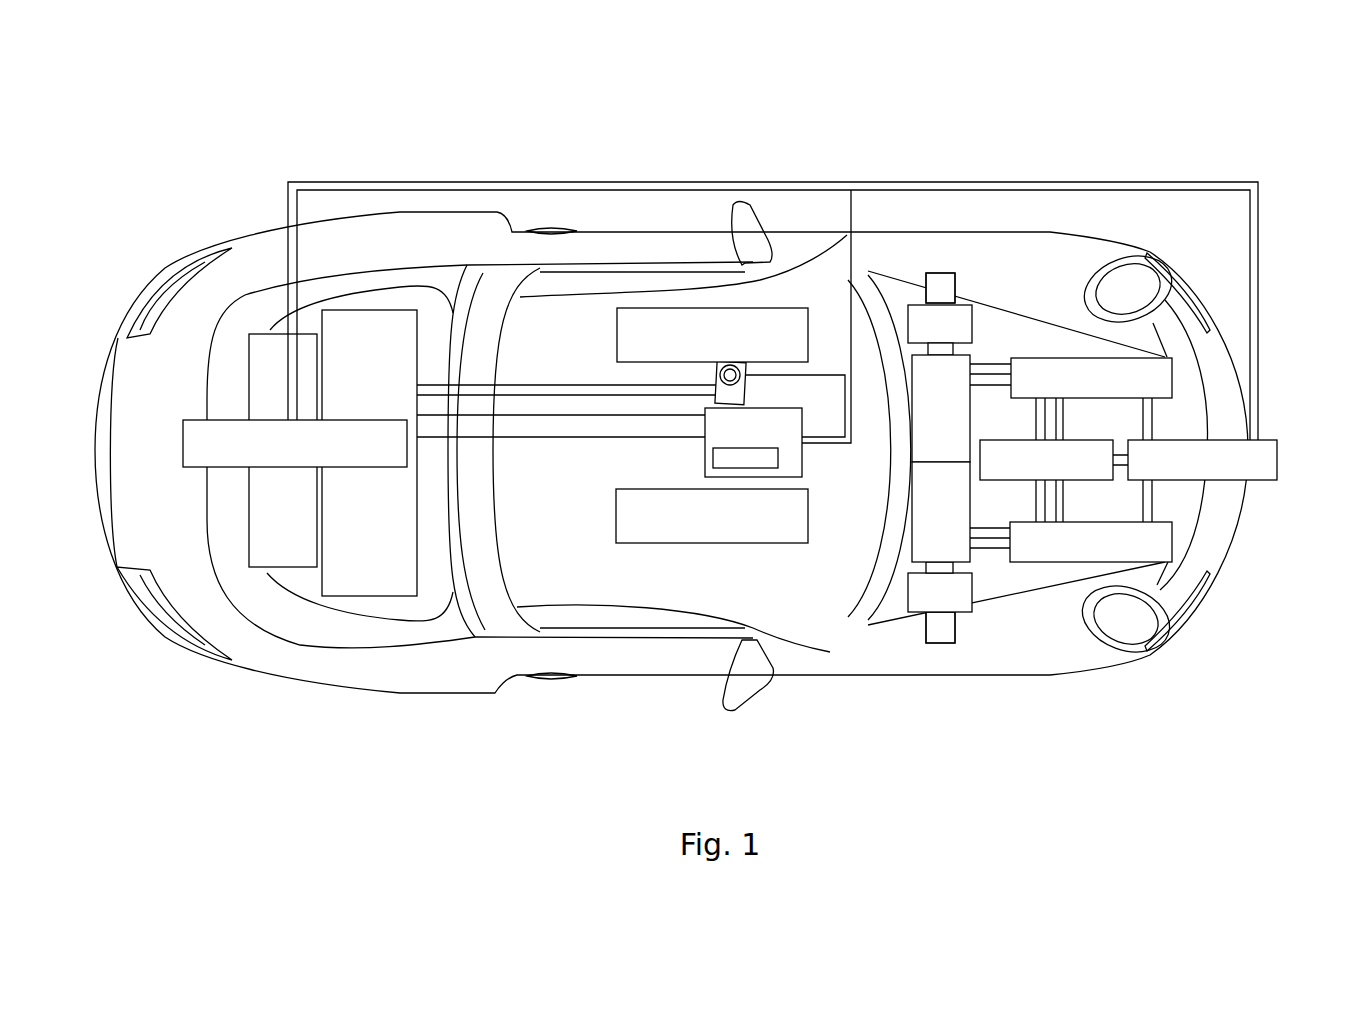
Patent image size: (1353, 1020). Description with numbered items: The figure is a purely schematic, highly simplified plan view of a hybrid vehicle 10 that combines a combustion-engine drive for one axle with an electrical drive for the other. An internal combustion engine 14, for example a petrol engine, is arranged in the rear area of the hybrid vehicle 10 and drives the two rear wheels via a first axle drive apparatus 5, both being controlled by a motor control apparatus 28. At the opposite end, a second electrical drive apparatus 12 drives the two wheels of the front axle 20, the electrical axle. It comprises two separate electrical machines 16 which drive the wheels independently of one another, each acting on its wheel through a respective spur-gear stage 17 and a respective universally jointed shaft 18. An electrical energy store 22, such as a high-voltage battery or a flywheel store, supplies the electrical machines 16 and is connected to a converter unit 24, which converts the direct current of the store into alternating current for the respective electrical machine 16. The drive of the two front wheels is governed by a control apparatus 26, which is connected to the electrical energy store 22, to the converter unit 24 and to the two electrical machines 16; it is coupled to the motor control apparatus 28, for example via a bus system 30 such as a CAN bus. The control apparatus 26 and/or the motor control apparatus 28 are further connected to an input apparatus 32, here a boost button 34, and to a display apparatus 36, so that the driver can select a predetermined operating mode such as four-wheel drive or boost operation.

The first axle drive apparatus 5 is at (289, 520).
The hybrid vehicle 10 is at (1065, 683).
The second electrical drive apparatus 12 is at (931, 265).
The internal combustion engine 14 is at (358, 544).
The electrical machines 16 is at (957, 374).
The spur-gear stages 17 is at (961, 322).
The universally jointed shafts 18 is at (943, 650).
The front axle 20 is at (940, 288).
The electrical energy store 22 is at (1102, 448).
The converter unit 24 is at (1160, 375).
The control apparatus 26 is at (1267, 447).
The motor control apparatus 28 is at (201, 437).
The bus system 30 is at (405, 181).
The input apparatus 32 is at (670, 305).
The boost button 34 is at (627, 320).
The display apparatus 36 is at (636, 527).